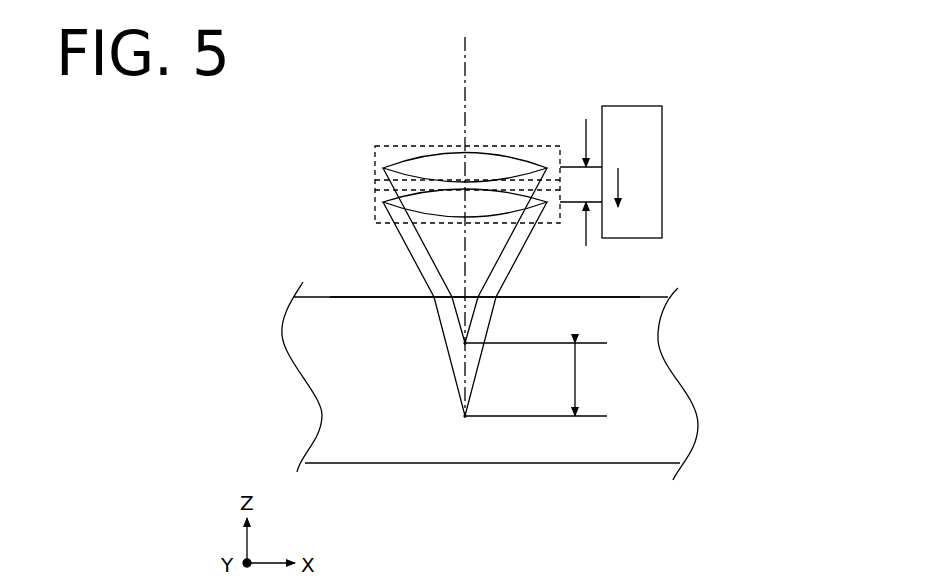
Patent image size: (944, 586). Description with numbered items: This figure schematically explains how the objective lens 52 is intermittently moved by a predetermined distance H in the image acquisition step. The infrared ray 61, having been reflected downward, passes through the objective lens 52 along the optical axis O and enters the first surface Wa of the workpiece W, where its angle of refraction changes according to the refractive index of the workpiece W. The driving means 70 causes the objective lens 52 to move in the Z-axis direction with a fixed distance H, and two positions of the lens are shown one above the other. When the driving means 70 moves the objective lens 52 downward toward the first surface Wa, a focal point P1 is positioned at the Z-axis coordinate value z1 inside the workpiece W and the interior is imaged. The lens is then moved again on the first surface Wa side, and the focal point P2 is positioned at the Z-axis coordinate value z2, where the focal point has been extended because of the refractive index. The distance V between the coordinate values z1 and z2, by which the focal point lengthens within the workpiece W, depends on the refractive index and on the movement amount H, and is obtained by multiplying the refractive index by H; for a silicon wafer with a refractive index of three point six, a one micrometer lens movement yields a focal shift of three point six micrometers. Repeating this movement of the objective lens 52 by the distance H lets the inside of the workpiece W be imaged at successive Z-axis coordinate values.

The objective lens 52 is at (407, 200).
The infrared ray 61 is at (490, 274).
The driving means 70 is at (648, 157).
The optical axis O is at (465, 60).
The predetermined distance H is at (560, 167).
The workpiece W is at (297, 323).
The first surface Wa is at (364, 297).
The Z-axis coordinate value z1 is at (551, 345).
The Z-axis coordinate value z2 is at (551, 418).
The distance of the focal point V is at (585, 379).
The focal point P1 is at (465, 343).
The focal point P2 is at (465, 416).